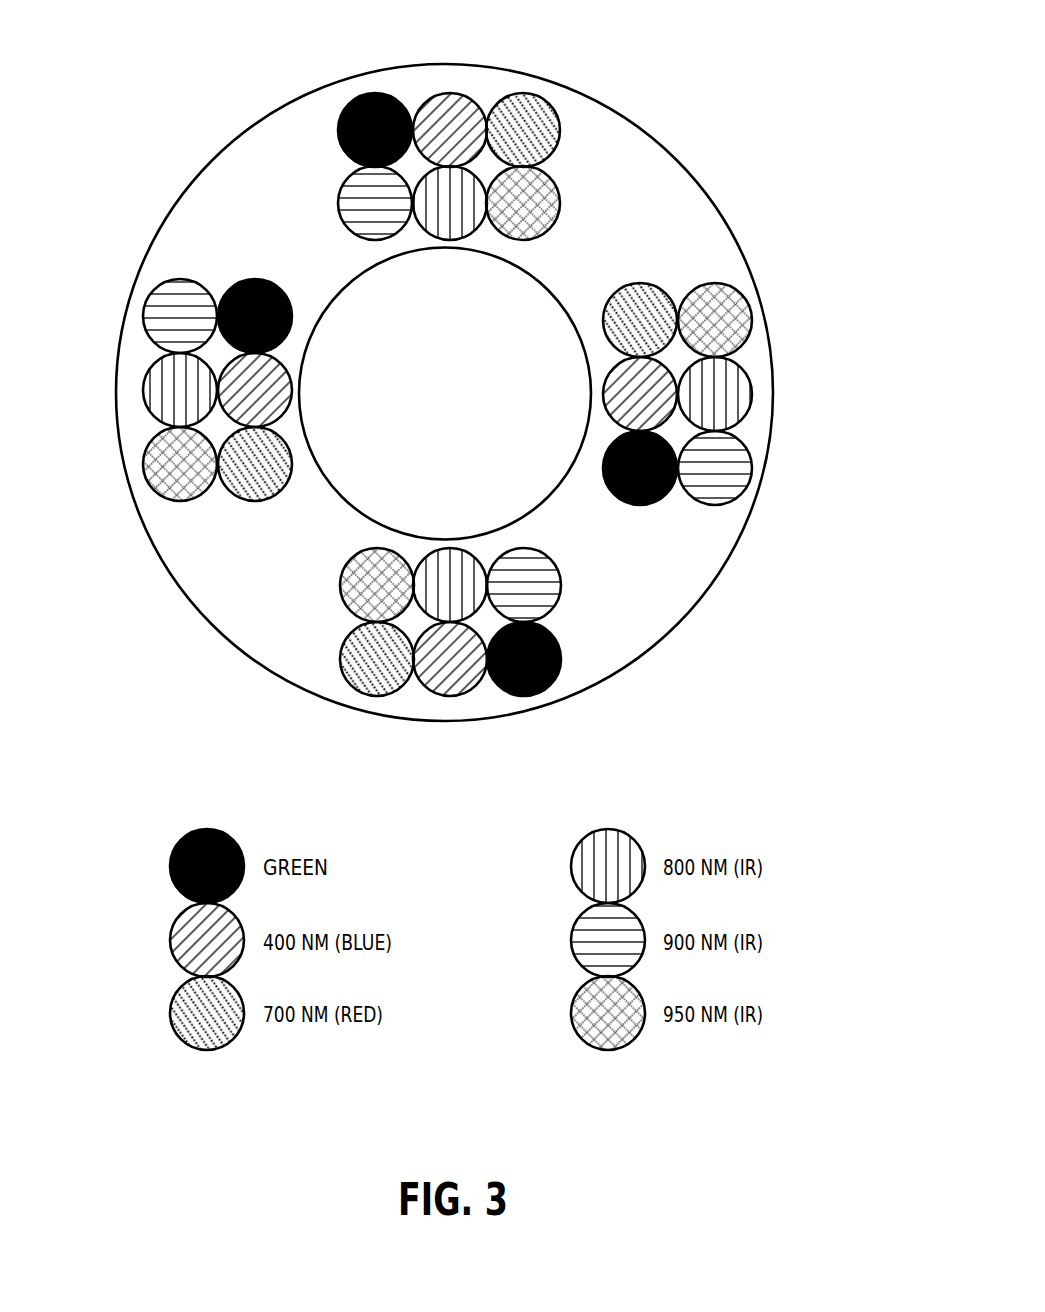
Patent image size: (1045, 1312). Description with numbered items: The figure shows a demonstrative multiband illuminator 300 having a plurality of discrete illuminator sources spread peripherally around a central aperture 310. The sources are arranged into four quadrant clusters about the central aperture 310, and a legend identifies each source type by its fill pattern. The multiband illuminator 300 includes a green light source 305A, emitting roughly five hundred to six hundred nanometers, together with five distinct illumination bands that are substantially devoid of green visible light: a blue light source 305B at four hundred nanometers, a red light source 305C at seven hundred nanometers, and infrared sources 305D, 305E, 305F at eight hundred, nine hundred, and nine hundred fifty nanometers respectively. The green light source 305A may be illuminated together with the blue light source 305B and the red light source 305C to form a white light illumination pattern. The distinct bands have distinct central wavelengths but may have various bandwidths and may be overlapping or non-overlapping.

The multiband illuminator 300 is at (740, 57).
The central aperture 310 is at (463, 403).
The green light source 305A is at (178, 838).
The blue light source 305B is at (173, 918).
The red light source 305C is at (177, 992).
The infrared source 305D is at (578, 840).
The infrared source 305E is at (576, 917).
The infrared source 305F is at (577, 992).